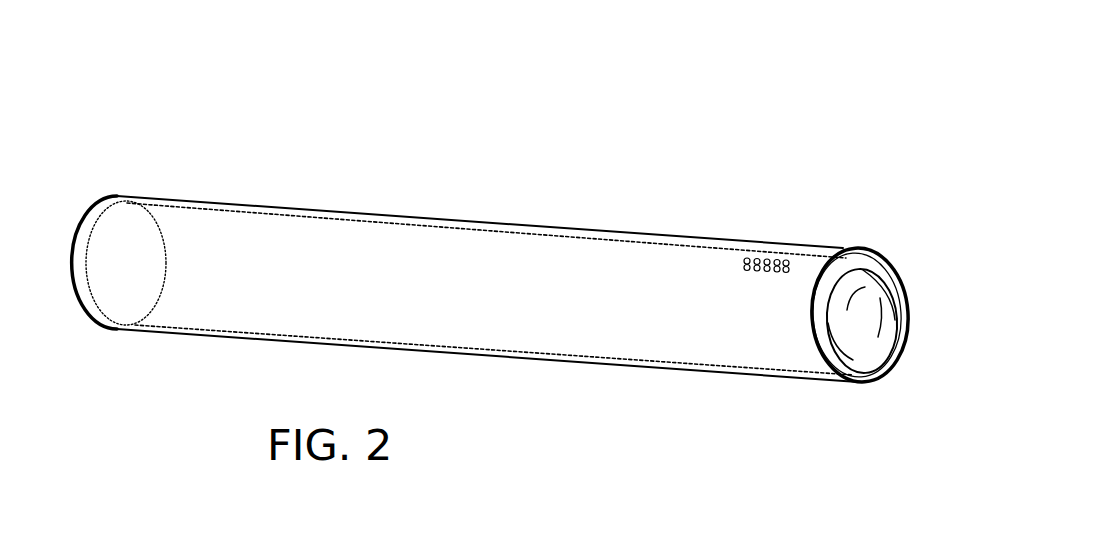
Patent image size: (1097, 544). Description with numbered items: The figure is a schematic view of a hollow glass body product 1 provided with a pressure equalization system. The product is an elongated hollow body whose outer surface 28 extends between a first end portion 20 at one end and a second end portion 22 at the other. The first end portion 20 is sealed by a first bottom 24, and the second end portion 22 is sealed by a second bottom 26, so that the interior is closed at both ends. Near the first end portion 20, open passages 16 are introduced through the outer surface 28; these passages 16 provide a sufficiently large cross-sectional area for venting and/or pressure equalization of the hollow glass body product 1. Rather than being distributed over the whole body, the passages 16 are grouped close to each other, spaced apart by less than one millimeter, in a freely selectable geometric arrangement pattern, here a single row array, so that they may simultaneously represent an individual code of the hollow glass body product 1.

The hollow glass body product 1 is at (305, 85).
The open passages 16 is at (792, 256).
The first end portion 20 is at (796, 203).
The second end portion 22 is at (132, 160).
The first bottom 24 is at (850, 278).
The second bottom 26 is at (103, 227).
The outer surface 28 is at (525, 250).